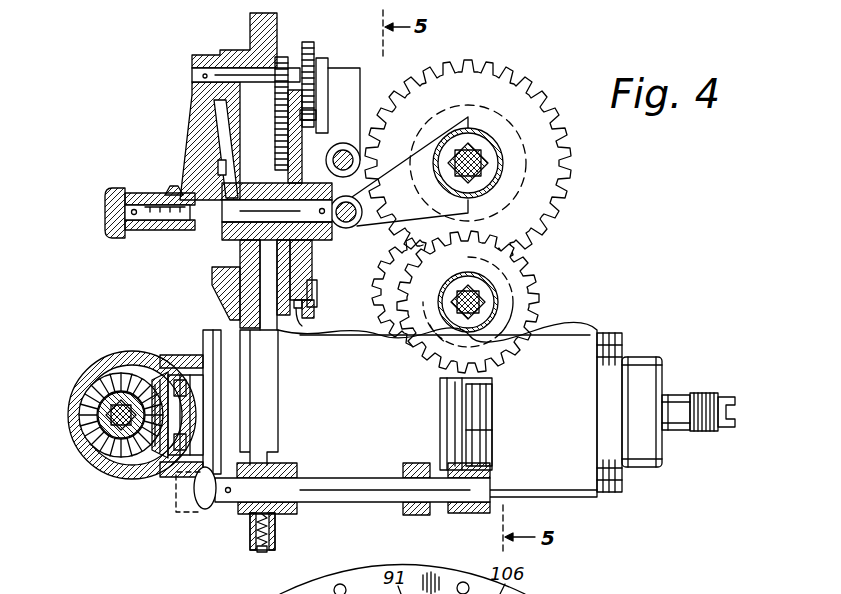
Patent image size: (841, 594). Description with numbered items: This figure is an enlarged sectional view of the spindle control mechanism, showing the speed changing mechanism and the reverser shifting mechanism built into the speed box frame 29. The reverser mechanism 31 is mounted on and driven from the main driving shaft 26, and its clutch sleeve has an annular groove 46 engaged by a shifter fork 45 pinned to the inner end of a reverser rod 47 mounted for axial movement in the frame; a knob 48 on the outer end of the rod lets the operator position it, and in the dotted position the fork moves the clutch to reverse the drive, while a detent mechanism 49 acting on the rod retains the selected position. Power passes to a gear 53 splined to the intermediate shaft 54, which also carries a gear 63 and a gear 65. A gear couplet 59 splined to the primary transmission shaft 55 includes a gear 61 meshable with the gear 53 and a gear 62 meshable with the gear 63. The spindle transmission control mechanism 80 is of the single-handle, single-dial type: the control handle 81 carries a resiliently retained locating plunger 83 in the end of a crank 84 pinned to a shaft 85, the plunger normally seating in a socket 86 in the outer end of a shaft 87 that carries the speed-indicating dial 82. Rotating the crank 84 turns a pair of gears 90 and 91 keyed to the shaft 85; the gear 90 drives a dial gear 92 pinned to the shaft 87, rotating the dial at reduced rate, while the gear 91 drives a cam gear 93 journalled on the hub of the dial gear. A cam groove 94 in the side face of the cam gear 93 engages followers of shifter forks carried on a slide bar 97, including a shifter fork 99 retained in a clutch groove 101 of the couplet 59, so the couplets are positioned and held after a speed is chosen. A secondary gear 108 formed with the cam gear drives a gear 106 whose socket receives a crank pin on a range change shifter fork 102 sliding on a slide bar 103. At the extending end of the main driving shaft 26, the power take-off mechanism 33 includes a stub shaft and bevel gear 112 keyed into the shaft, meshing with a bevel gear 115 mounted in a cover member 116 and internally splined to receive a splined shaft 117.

The main driving shaft 26 is at (678, 395).
The speed box frame 29 is at (247, 537).
The reverser mechanism 31 is at (434, 429).
The power take-off mechanism 33 is at (111, 418).
The shifter fork 45 is at (488, 432).
The annular groove 46 is at (488, 400).
The reverser rod 47 is at (342, 478).
The knob 48 is at (205, 509).
The detent mechanism 49 is at (279, 529).
The gear 53 is at (548, 256).
The intermediate shaft 54 is at (458, 333).
The primary transmission shaft 55 is at (470, 128).
The gear couplet 59 is at (573, 163).
The gear 61 is at (481, 163).
The gear 62 is at (520, 83).
The gear 63 is at (506, 341).
The gear 65 is at (548, 292).
The spindle transmission control mechanism 80 is at (186, 106).
The control handle 81 is at (106, 215).
The dial 82 is at (212, 287).
The locating plunger 83 is at (161, 190).
The crank 84 is at (192, 118).
The shaft 85 is at (192, 73).
The socket 86 is at (207, 228).
The shaft 87 is at (212, 258).
The gear 90 is at (286, 58).
The gear 91 is at (317, 44).
The dial gear 92 is at (285, 338).
The cam gear 93 is at (316, 313).
The cam groove 94 is at (317, 292).
The slide bar 97 is at (358, 200).
The shifter fork 99 is at (358, 223).
The clutch groove 101 is at (346, 80).
The range change shifter fork 102 is at (330, 100).
The slide bar 103 is at (345, 143).
The gear 106 is at (302, 115).
The secondary gear 108 is at (303, 323).
The stub shaft and bevel gear 112 is at (177, 356).
The bevel gear 115 is at (86, 434).
The cover member 116 is at (100, 356).
The splined shaft 117 is at (84, 414).